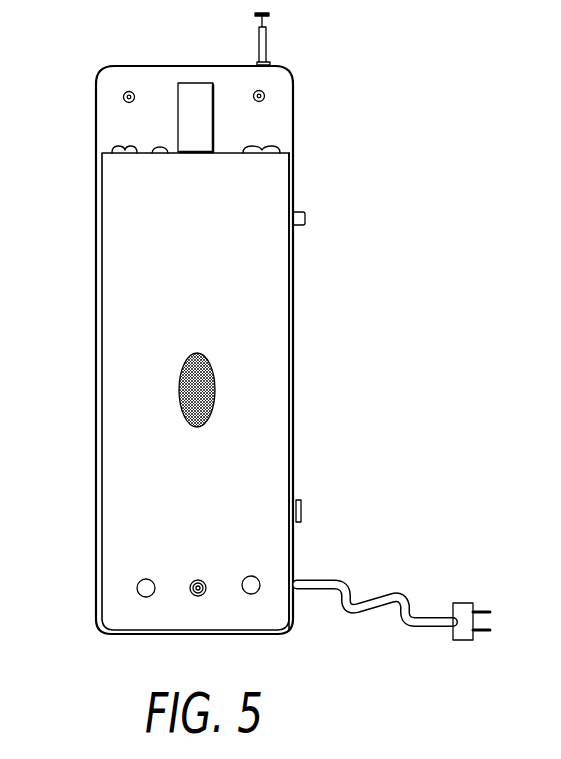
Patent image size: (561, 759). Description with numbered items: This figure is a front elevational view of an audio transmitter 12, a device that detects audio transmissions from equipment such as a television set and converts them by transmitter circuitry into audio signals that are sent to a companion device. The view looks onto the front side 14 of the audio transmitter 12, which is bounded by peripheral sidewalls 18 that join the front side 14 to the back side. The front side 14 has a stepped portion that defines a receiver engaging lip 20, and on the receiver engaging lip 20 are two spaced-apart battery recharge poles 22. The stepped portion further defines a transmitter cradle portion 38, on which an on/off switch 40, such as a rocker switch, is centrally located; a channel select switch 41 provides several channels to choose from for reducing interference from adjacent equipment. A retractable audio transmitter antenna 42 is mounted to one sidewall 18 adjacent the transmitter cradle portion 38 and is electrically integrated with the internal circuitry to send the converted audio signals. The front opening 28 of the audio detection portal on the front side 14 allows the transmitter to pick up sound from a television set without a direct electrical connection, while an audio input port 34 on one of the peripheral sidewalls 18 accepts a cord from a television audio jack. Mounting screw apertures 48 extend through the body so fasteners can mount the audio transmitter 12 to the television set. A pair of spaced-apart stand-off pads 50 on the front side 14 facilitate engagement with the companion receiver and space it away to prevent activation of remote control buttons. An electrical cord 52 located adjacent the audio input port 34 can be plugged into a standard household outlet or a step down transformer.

The audio transmitter 12 is at (317, 240).
The front side 14 is at (268, 349).
The peripheral sidewalls 18 is at (158, 636).
The receiver engaging lip 20 is at (163, 148).
The battery recharge poles 22 is at (137, 152).
The front opening 28 is at (187, 411).
The audio input port 34 is at (303, 505).
The transmitter cradle portion 38 is at (232, 78).
The on/off switch 40 is at (178, 110).
The channel select switch 41 is at (305, 215).
The retractable audio transmitter antenna 42 is at (267, 49).
The mounting screw apertures 48 is at (123, 97).
The stand-off pads 50 is at (141, 579).
The electrical cord 52 is at (378, 614).